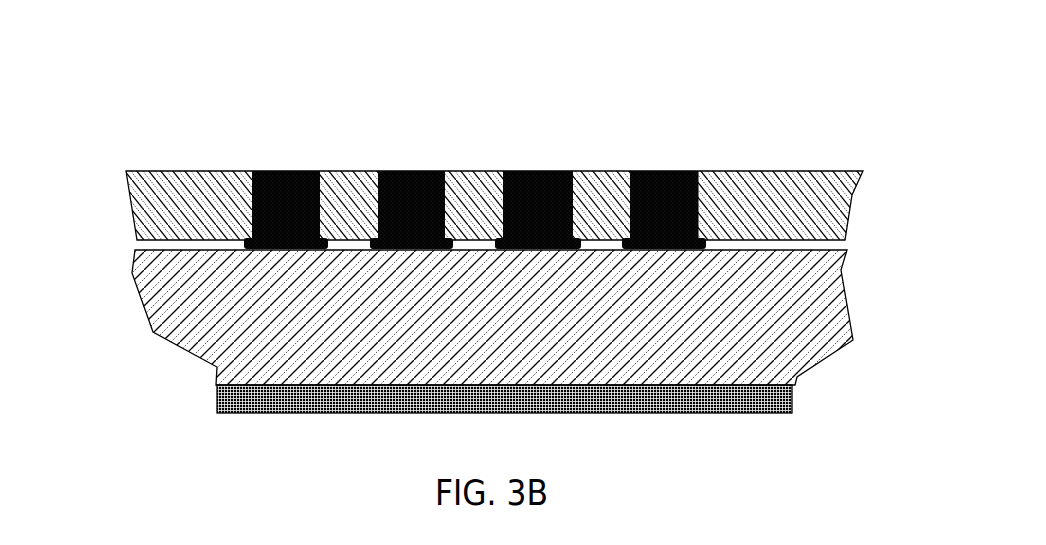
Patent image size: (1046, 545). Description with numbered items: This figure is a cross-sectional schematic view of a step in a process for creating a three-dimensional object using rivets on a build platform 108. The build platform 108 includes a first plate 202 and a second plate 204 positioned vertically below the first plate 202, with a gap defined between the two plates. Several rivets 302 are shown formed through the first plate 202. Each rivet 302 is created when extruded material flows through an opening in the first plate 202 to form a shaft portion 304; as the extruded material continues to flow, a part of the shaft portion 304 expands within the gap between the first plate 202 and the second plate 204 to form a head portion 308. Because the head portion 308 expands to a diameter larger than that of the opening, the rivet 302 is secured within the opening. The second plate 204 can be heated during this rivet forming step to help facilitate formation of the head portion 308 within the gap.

The build platform 108 is at (153, 82).
The first plate 202 is at (819, 228).
The second plate 204 is at (822, 310).
The rivet 302 is at (661, 170).
The shaft portion 304 is at (695, 228).
The head portion 308 is at (707, 245).